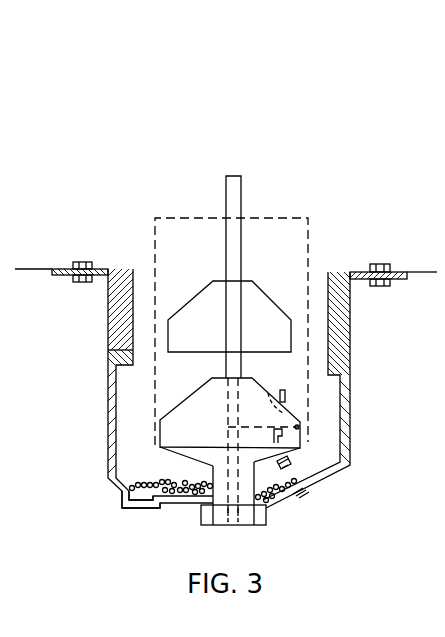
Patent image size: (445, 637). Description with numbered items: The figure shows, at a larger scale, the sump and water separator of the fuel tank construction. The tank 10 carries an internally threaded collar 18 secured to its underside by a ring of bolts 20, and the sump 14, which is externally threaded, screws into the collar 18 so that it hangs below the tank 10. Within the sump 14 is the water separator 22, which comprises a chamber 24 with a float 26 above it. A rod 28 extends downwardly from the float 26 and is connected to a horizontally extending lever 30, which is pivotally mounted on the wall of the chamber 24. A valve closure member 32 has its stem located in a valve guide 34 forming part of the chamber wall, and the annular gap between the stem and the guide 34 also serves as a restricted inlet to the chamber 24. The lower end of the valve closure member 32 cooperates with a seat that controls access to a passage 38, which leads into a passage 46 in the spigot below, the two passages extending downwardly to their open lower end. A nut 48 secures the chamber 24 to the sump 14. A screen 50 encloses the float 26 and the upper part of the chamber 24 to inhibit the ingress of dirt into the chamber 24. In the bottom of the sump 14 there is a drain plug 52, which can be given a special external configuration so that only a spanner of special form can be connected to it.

The fuel tank 10 is at (420, 273).
The sump 14 is at (350, 452).
The internally threaded collar 18 is at (349, 300).
The bolts 20 is at (390, 264).
The water separator 22 is at (150, 433).
The chamber 24 is at (184, 415).
The float 26 is at (267, 300).
The rod 28 is at (226, 366).
The lever 30 is at (283, 454).
The valve closure member 32 is at (275, 385).
The valve guide 34 is at (287, 395).
The passage 38 is at (297, 492).
The passage 46 is at (237, 515).
The nut 48 is at (203, 523).
The screen 50 is at (173, 216).
The drain plug 52 is at (140, 510).